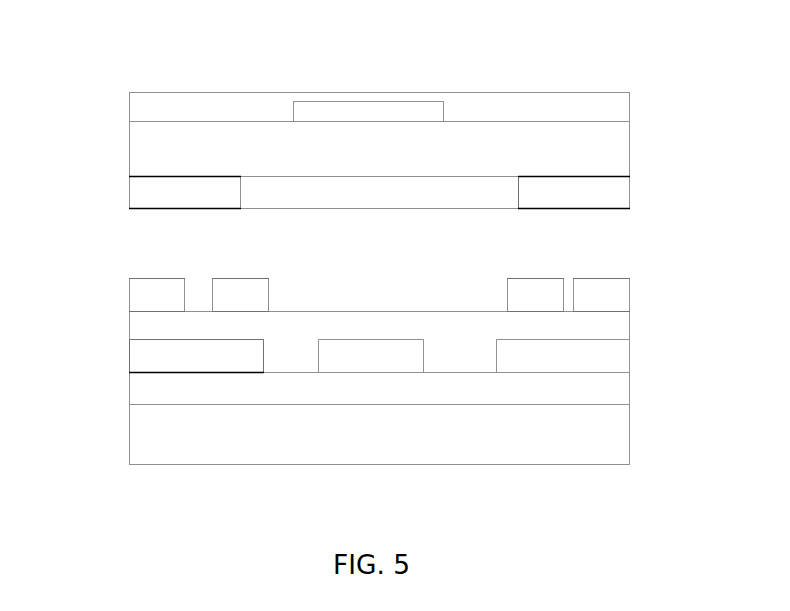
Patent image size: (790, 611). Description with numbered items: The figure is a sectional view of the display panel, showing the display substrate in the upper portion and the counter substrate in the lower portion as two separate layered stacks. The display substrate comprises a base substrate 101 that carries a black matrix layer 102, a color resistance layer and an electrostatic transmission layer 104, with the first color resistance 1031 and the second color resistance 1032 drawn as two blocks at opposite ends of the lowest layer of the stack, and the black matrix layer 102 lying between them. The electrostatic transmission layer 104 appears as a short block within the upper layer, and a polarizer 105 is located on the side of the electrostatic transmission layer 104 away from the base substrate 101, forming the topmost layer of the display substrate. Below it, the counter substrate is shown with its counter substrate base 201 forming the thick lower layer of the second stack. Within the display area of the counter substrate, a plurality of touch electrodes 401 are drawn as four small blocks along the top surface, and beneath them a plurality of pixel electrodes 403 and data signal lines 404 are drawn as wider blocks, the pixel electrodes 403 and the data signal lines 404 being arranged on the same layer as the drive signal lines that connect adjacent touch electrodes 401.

The base substrate 101 is at (380, 100).
The black matrix layer 102 is at (380, 116).
The electrostatic transmission layer 104 is at (375, 72).
The polarizer 105 is at (414, 72).
The first color resistance 1031 is at (151, 159).
The second color resistance 1032 is at (618, 165).
The counter substrate base 201 is at (380, 417).
The touch electrodes 401 is at (337, 268).
The pixel electrodes 403 is at (337, 324).
The data signal lines 404 is at (412, 431).